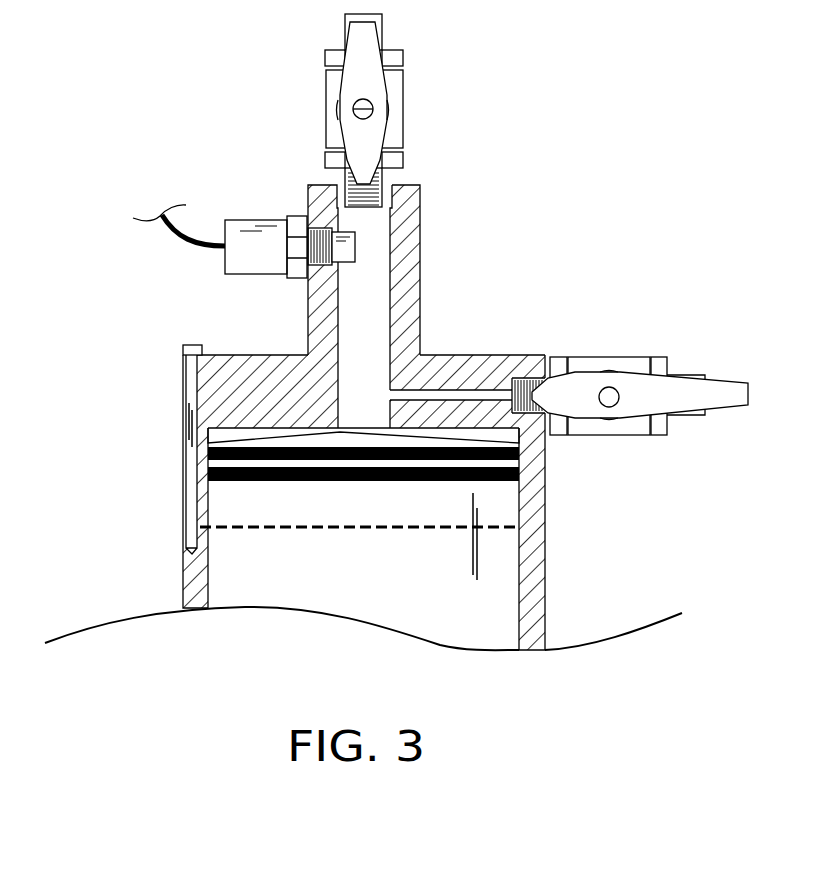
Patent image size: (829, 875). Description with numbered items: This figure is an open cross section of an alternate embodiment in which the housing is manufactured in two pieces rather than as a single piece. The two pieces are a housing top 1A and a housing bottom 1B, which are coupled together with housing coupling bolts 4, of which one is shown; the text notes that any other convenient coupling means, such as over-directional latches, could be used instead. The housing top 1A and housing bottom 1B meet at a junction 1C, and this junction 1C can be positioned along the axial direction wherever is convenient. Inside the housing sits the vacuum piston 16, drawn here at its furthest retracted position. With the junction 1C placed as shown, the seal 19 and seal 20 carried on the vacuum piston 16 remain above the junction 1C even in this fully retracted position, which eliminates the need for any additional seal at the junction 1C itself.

The housing top 1A is at (420, 275).
The housing bottom 1B is at (547, 578).
The junction 1C is at (545, 527).
The housing coupling bolt 4 is at (193, 347).
The vacuum piston 16 is at (253, 563).
The seal 19 is at (198, 452).
The seal 20 is at (197, 477).